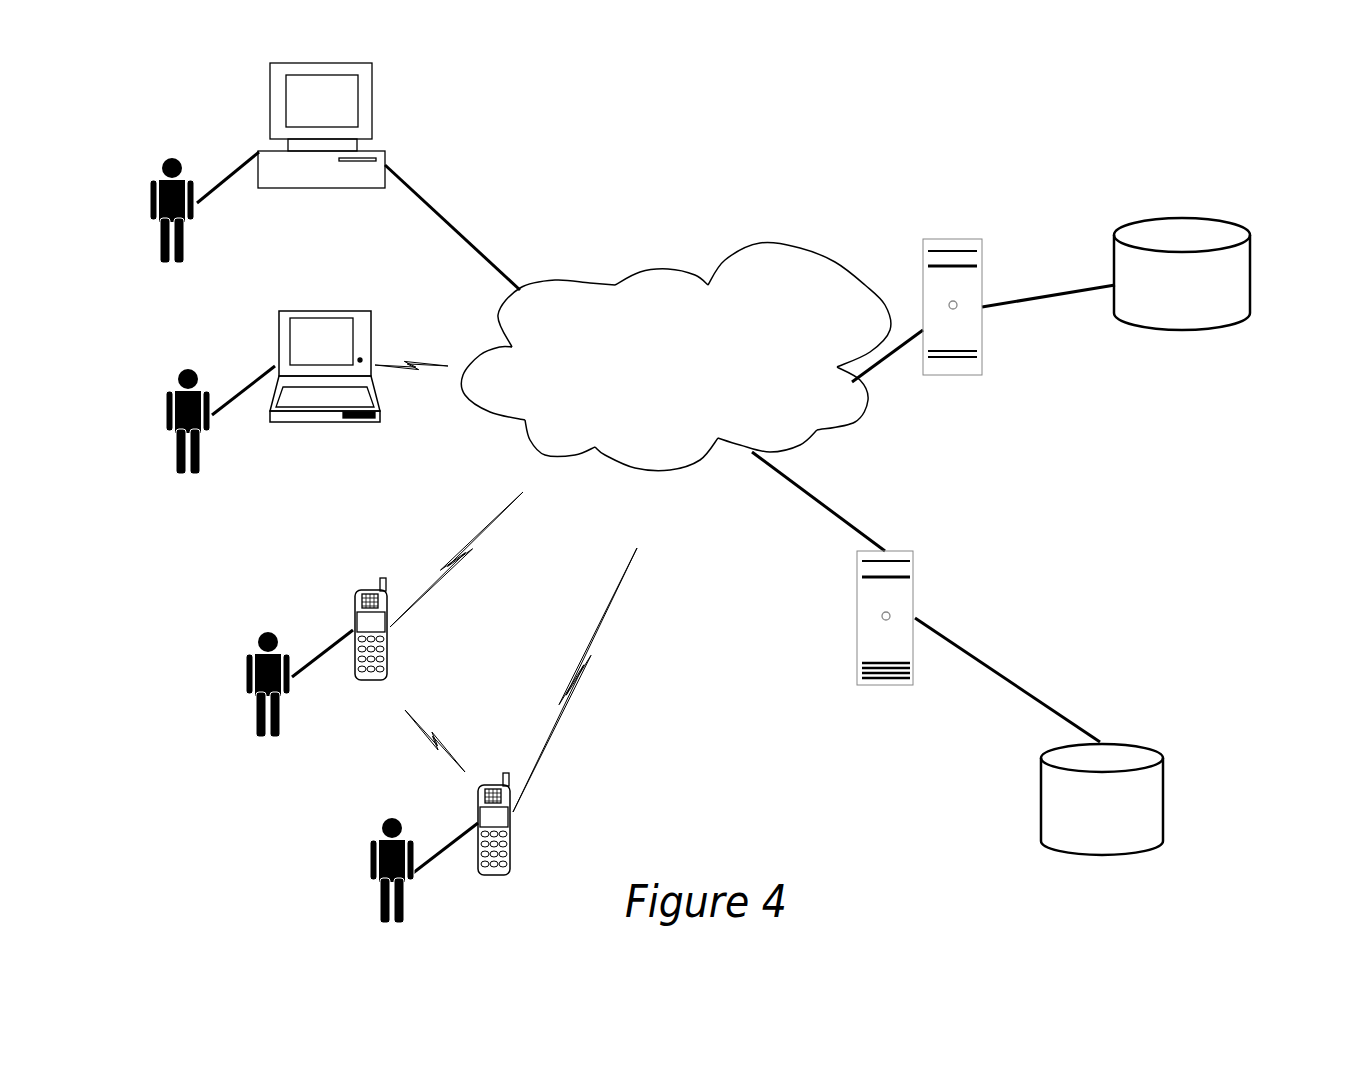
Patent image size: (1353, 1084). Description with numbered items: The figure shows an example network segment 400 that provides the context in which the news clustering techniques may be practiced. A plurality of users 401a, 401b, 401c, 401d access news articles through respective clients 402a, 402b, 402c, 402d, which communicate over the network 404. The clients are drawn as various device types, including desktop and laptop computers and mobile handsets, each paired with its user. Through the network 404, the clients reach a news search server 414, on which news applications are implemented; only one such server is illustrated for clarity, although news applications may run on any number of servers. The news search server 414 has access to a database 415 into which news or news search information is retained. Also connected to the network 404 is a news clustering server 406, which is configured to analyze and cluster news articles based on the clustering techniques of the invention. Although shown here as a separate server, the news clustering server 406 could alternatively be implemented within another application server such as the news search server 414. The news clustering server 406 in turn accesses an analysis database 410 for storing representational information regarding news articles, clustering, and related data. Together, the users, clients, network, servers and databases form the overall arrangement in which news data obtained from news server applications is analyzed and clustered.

The network segment 400 is at (1256, 148).
The user 401a is at (152, 190).
The user 401b is at (168, 403).
The user 401c is at (248, 665).
The user 401d is at (370, 860).
The client 402a is at (262, 158).
The client 402b is at (278, 365).
The client 402c is at (355, 623).
The client 402d is at (502, 783).
The network 404 is at (676, 356).
The news clustering server 406 is at (857, 618).
The database 410 is at (1042, 793).
The news search server 414 is at (923, 300).
The database 415 is at (1115, 268).